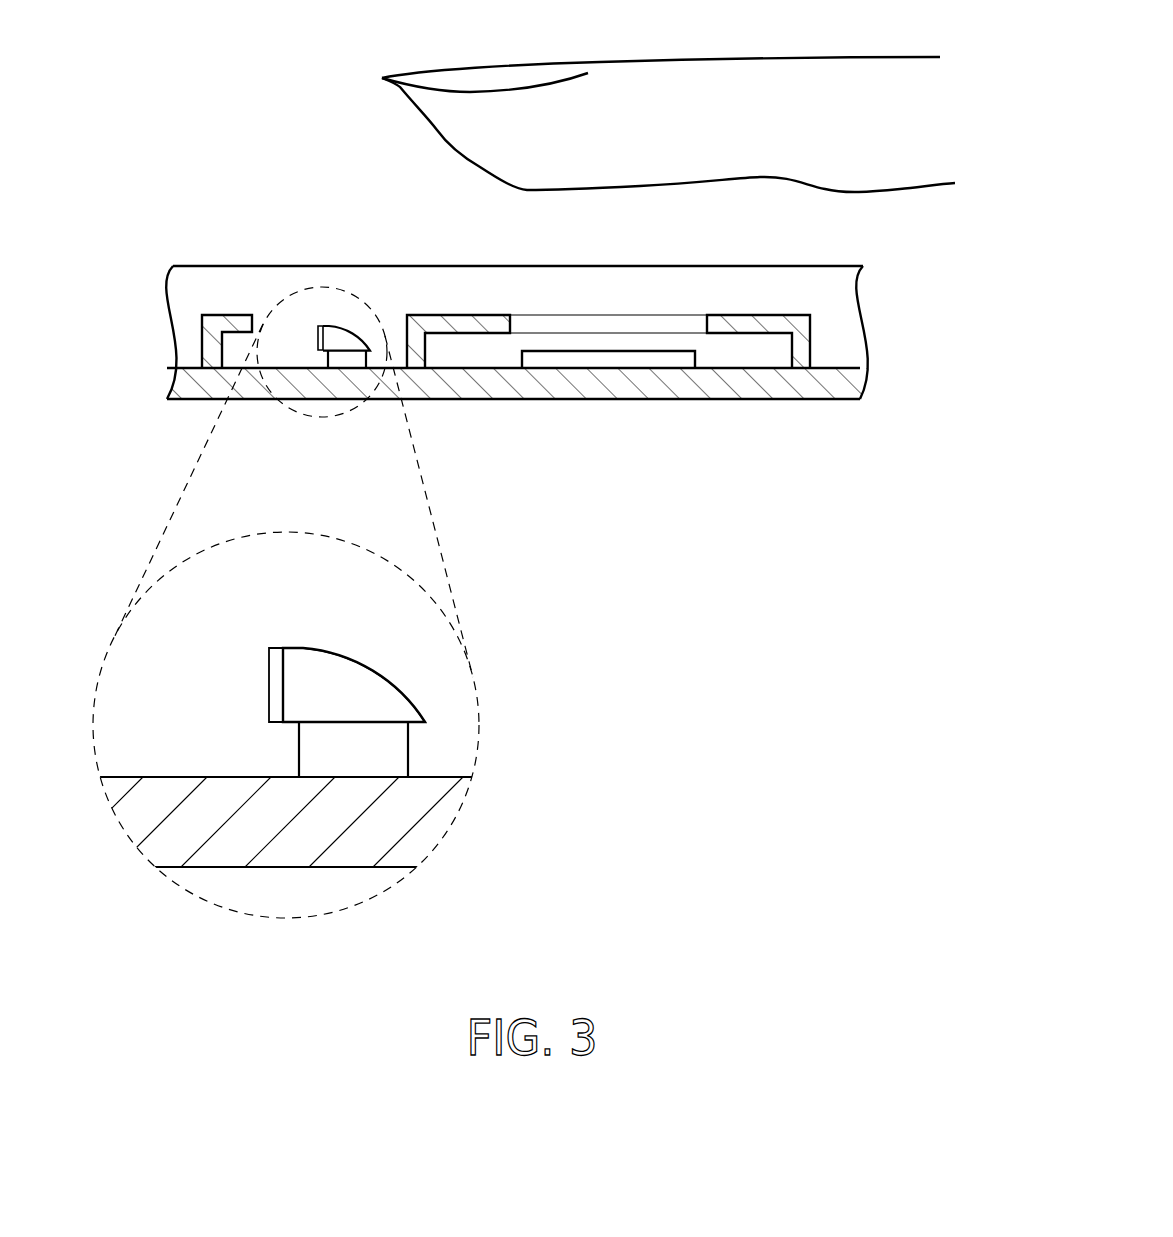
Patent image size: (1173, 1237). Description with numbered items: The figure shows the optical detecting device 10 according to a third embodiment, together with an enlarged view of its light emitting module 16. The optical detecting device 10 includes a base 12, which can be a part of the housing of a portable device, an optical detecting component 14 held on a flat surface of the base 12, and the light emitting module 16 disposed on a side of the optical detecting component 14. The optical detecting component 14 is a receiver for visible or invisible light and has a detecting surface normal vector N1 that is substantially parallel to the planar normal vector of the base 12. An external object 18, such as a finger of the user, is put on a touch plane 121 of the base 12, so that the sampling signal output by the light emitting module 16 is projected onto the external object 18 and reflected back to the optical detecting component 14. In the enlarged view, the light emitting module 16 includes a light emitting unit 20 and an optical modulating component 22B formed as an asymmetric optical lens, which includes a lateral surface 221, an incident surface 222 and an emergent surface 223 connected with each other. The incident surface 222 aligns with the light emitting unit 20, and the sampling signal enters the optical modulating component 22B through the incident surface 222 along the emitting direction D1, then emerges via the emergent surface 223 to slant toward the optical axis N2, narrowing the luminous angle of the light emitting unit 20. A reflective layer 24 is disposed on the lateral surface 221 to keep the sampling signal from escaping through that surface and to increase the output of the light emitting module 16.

The optical detecting device 10 is at (190, 233).
The base 12 is at (758, 383).
The touch plane 121 is at (575, 312).
The optical detecting component 14 is at (667, 358).
The light emitting module 16 is at (365, 330).
The external object 18 is at (843, 70).
The light emitting unit 20 is at (380, 750).
The optical modulating component 22B is at (402, 715).
The lateral surface 221 is at (282, 665).
The incident surface 222 is at (292, 723).
The emergent surface 223 is at (407, 695).
The reflective layer 24 is at (277, 702).
The detecting surface normal vector N1 is at (610, 347).
The optical axis N2 is at (357, 660).
The emitting direction D1 is at (355, 688).